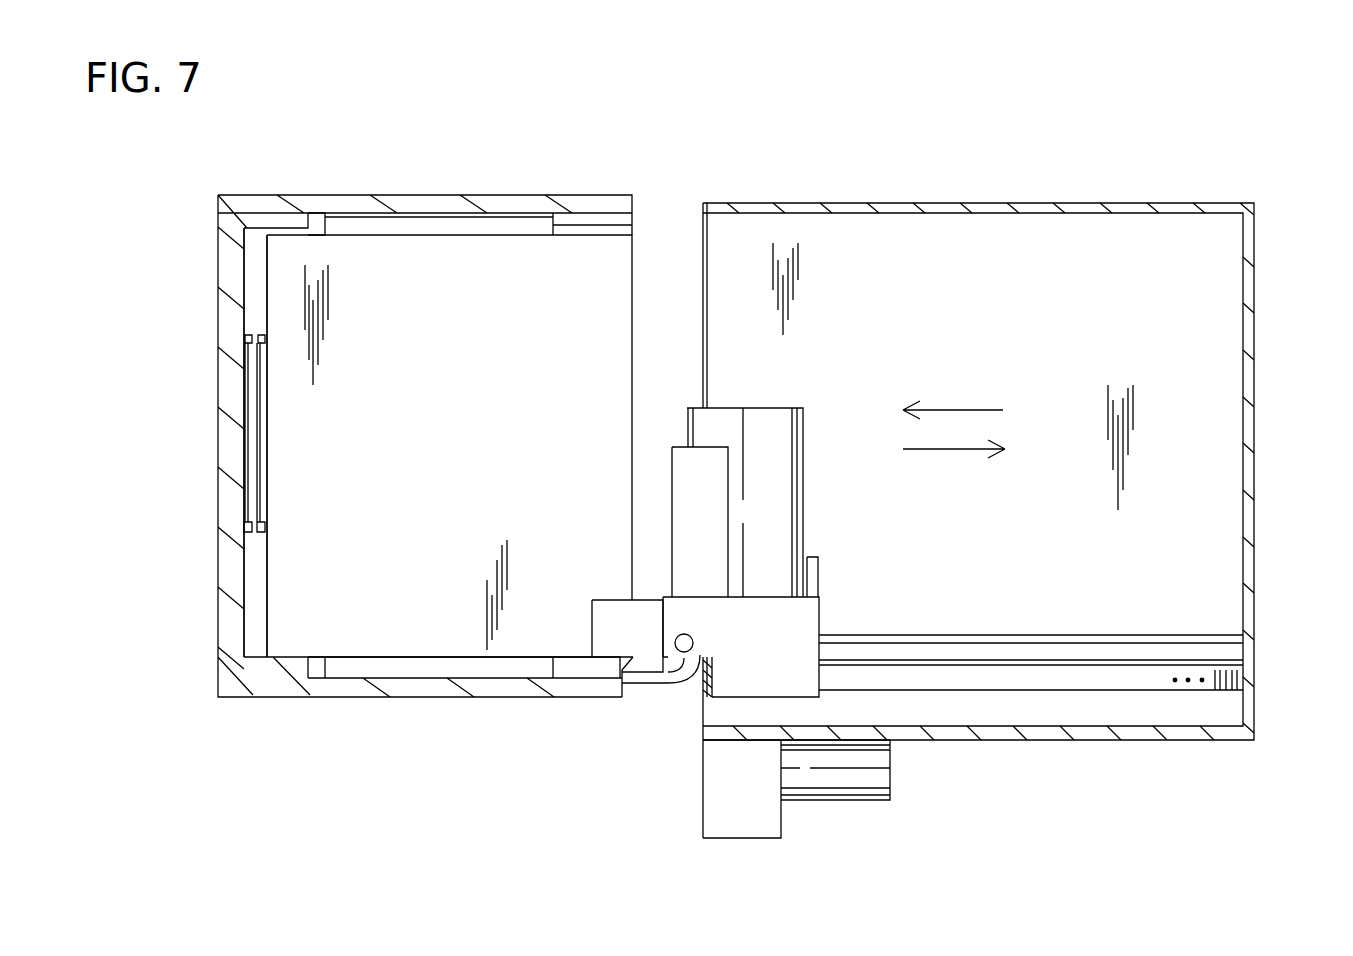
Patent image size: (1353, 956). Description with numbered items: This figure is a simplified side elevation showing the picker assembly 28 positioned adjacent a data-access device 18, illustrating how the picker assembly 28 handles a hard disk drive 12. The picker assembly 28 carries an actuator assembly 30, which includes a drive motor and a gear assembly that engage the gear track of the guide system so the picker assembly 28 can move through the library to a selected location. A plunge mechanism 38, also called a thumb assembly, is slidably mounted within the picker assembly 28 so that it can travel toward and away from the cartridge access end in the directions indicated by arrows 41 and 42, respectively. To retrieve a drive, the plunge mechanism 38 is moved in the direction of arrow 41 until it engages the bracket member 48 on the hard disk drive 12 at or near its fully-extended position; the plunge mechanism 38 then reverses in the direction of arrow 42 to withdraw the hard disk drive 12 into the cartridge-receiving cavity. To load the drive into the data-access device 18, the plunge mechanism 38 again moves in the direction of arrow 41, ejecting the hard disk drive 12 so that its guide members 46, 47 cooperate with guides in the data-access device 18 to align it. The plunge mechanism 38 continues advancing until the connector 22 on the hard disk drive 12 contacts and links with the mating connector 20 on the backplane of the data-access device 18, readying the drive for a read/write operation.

The data-access device 18 is at (407, 196).
The hard disk drive 12 is at (490, 381).
The guide member 46 is at (560, 226).
The guide member 47 is at (330, 670).
The connector 20 is at (247, 517).
The connector 22 is at (262, 518).
The bracket member 48 is at (612, 598).
The plunge mechanism 38 is at (650, 686).
The picker assembly 28 is at (1276, 274).
The arrow 41 is at (982, 410).
The arrow 42 is at (928, 449).
The actuator assembly 30 is at (838, 808).